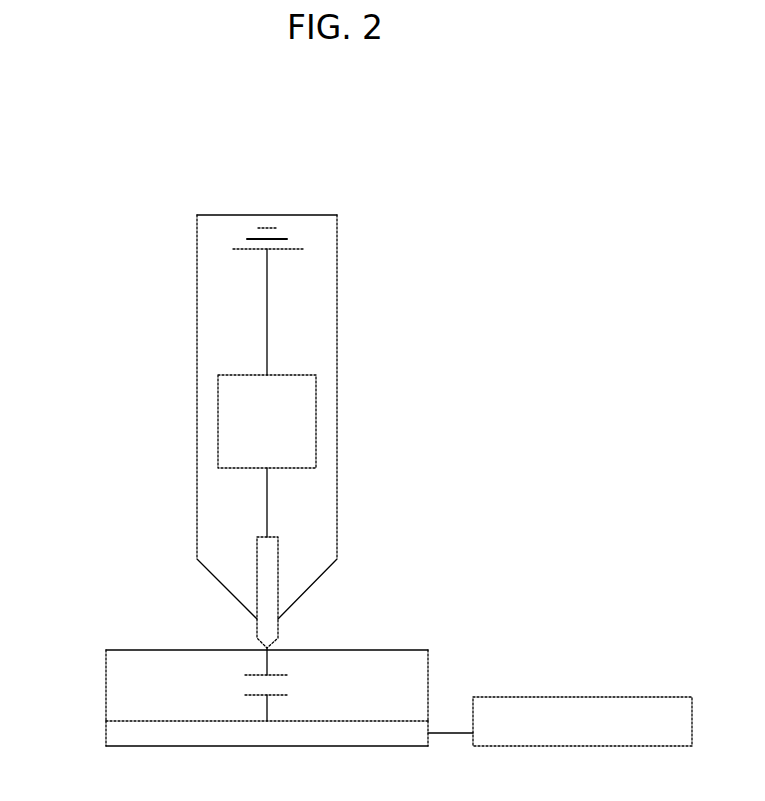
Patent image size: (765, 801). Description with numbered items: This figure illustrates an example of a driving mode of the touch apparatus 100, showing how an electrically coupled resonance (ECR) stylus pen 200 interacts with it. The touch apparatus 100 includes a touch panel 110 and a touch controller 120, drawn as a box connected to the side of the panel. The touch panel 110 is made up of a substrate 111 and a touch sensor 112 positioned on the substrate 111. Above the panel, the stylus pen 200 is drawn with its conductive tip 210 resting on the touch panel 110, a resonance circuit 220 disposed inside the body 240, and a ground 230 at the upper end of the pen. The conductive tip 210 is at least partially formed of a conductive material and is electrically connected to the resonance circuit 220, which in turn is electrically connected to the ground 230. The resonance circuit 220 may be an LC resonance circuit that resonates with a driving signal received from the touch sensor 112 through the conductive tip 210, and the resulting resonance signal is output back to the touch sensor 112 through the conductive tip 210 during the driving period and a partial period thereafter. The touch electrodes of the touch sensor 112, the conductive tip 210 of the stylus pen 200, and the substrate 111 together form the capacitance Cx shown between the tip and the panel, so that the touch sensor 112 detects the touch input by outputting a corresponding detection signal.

The touch apparatus 100 is at (507, 574).
The touch panel 110 is at (400, 648).
The substrate 111 is at (106, 686).
The touch sensor 112 is at (106, 731).
The touch controller 120 is at (503, 697).
The stylus pen 200 is at (340, 273).
The conductive tip 210 is at (279, 628).
The resonance circuit 220 is at (316, 420).
The ground 230 is at (250, 232).
The body 240 is at (197, 350).